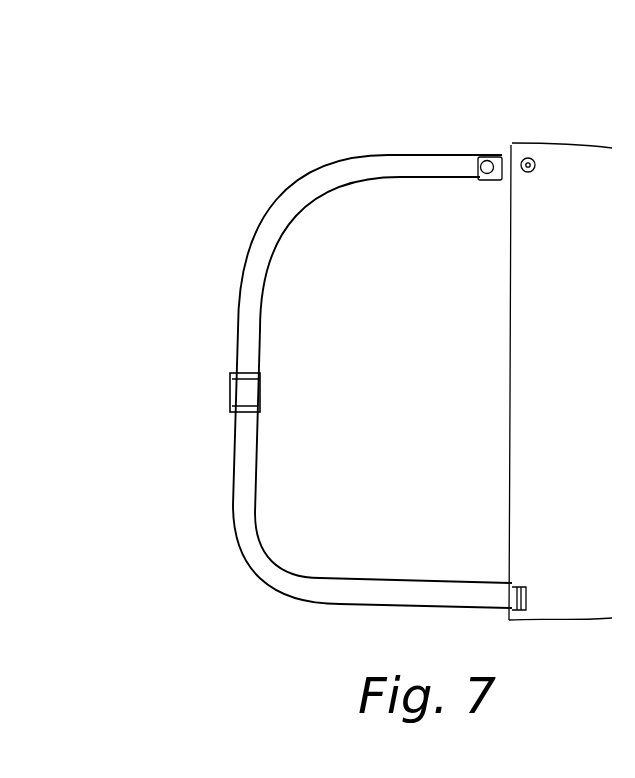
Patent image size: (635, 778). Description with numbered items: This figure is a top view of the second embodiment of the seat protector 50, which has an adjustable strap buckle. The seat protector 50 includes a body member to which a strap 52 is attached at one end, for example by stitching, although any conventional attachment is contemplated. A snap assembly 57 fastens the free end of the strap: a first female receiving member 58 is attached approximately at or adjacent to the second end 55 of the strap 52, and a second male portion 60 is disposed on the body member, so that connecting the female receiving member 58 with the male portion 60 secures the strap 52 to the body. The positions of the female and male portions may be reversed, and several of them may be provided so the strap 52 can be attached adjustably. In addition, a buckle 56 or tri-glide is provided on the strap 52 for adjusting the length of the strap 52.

The seat protector 50 is at (478, 374).
The strap 52 is at (260, 220).
The second end of strap 55 is at (500, 154).
The buckle 56 is at (230, 377).
The snap assembly 57 is at (528, 192).
The first female receiving member 58 is at (483, 176).
The second male portion 60 is at (537, 163).